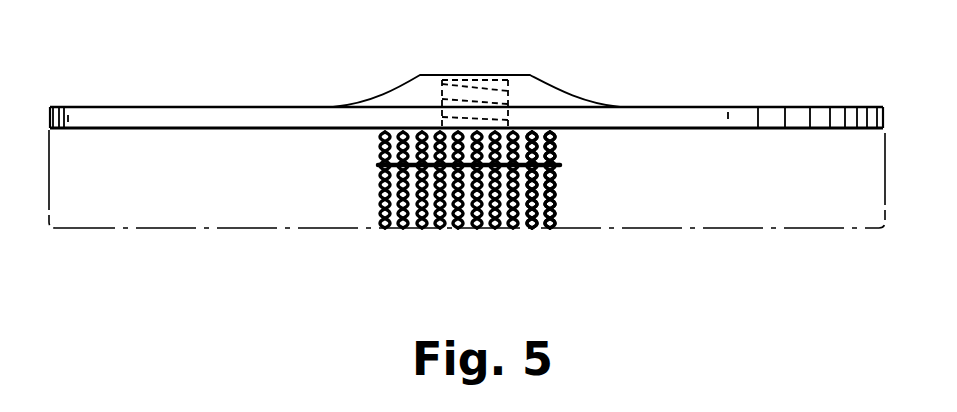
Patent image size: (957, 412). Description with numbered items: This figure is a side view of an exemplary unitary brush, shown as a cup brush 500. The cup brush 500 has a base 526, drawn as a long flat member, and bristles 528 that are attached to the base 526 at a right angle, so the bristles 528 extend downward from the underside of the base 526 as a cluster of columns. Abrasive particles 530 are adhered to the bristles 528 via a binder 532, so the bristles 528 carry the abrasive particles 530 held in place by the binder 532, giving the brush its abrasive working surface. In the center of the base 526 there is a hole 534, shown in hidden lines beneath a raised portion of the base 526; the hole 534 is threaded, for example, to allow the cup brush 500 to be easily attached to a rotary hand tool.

The cup brush 500 is at (288, 46).
The base 526 is at (683, 118).
The bristles 528 is at (557, 177).
The abrasive particles 530 is at (555, 208).
The binder 532 is at (530, 203).
The hole 534 is at (493, 80).